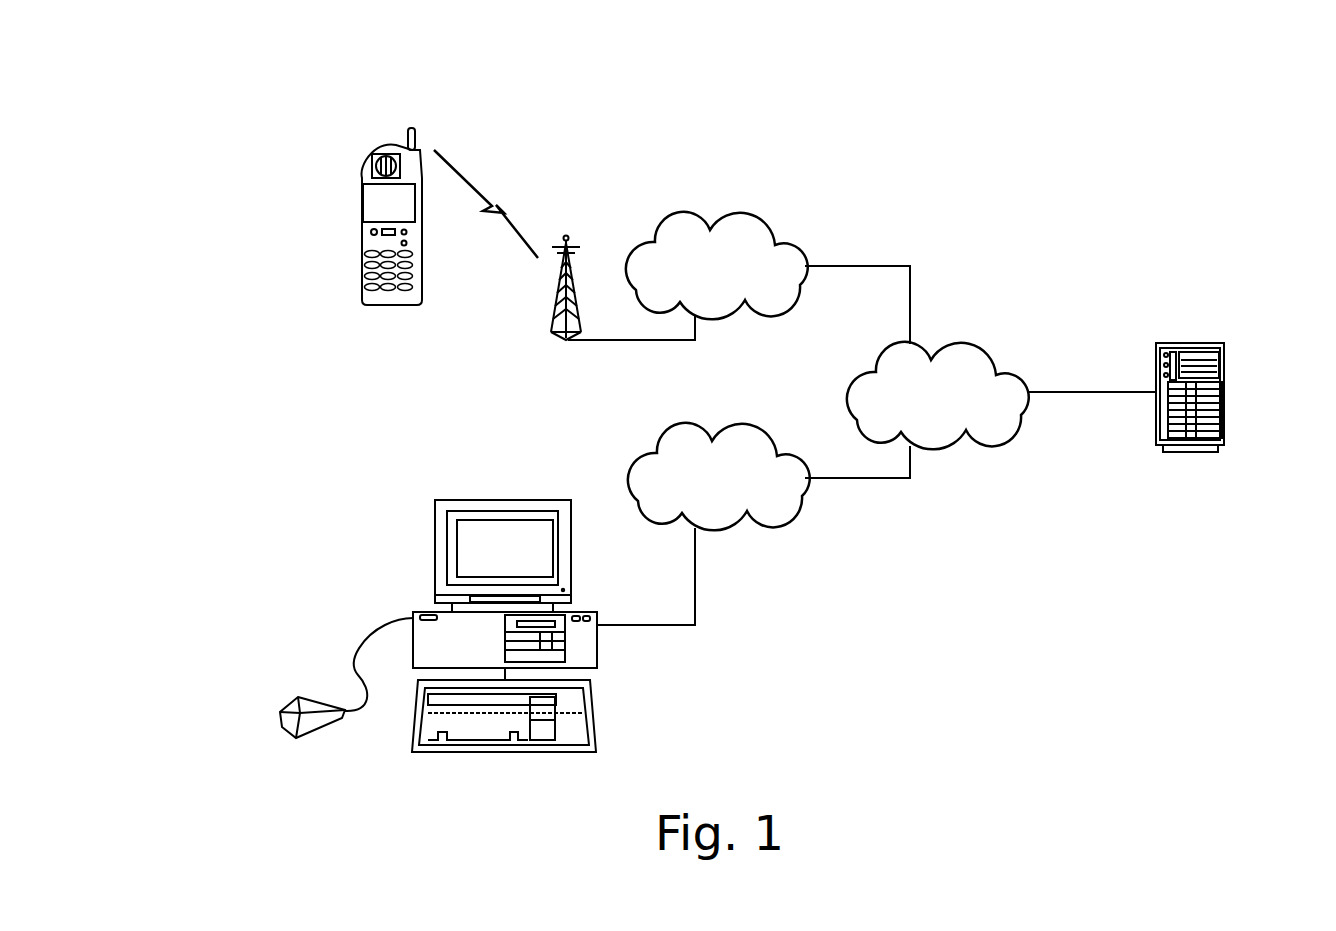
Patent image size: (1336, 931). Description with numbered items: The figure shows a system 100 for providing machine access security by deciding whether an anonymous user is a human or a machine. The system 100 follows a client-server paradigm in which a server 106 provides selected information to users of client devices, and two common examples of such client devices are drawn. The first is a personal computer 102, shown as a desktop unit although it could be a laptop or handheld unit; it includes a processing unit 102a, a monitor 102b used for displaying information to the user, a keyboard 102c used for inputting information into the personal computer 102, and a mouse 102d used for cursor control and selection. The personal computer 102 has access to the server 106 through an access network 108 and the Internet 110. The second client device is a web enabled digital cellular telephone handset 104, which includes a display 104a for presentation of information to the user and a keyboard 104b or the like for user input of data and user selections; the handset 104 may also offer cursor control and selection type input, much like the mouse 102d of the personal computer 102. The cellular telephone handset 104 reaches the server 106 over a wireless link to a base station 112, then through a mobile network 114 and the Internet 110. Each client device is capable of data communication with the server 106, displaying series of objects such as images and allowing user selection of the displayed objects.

The system 100 is at (735, 61).
The personal computer 102 is at (400, 490).
The processing unit 102a is at (400, 614).
The monitor 102b is at (433, 565).
The keyboard 102c is at (410, 733).
The mouse 102d is at (280, 722).
The cellular telephone handset 104 is at (322, 226).
The display 104a is at (373, 200).
The keyboard 104b is at (362, 262).
The server 106 is at (1225, 382).
The access network 108 is at (793, 497).
The Internet 110 is at (985, 437).
The base station 112 is at (570, 265).
The mobile network 114 is at (783, 240).